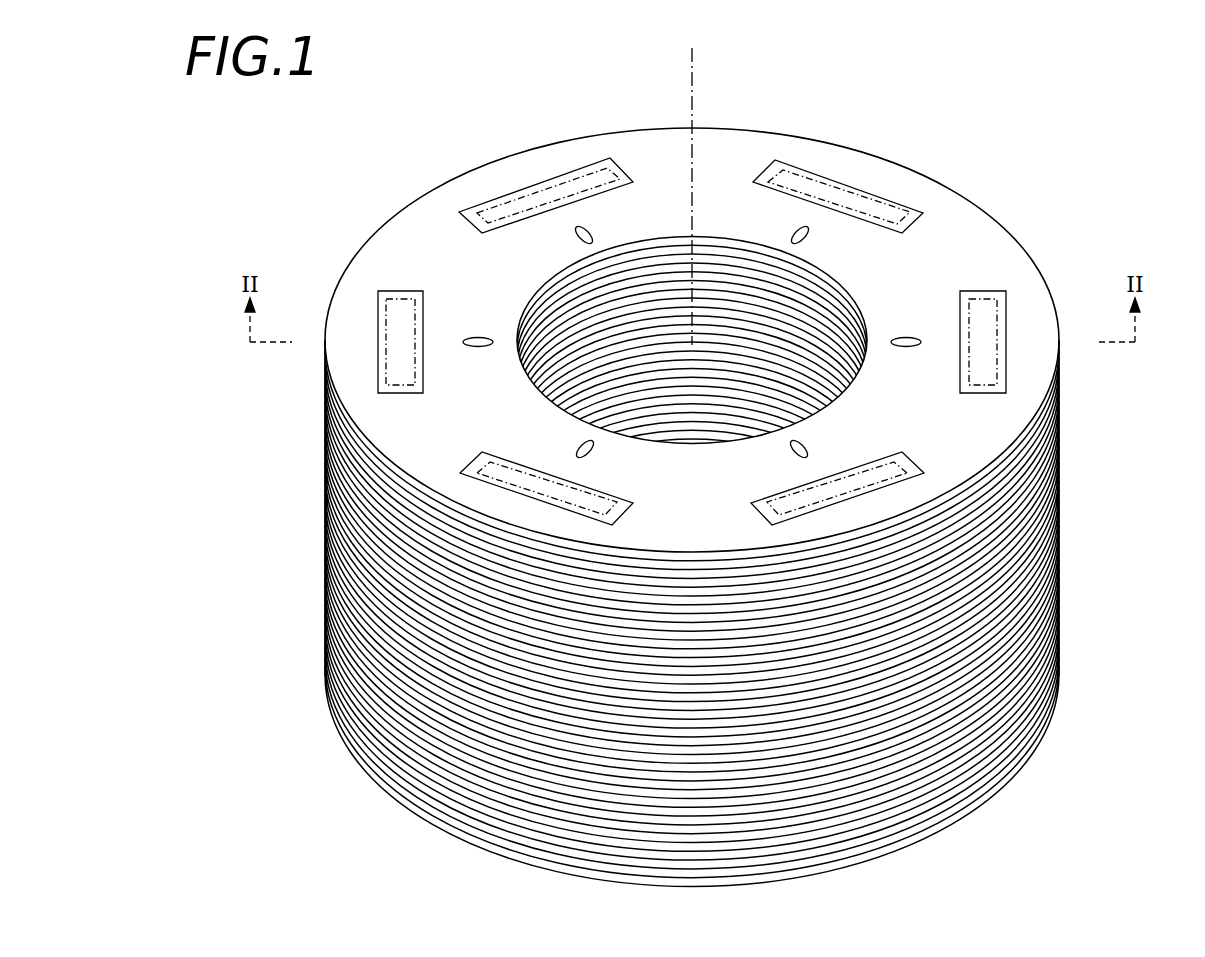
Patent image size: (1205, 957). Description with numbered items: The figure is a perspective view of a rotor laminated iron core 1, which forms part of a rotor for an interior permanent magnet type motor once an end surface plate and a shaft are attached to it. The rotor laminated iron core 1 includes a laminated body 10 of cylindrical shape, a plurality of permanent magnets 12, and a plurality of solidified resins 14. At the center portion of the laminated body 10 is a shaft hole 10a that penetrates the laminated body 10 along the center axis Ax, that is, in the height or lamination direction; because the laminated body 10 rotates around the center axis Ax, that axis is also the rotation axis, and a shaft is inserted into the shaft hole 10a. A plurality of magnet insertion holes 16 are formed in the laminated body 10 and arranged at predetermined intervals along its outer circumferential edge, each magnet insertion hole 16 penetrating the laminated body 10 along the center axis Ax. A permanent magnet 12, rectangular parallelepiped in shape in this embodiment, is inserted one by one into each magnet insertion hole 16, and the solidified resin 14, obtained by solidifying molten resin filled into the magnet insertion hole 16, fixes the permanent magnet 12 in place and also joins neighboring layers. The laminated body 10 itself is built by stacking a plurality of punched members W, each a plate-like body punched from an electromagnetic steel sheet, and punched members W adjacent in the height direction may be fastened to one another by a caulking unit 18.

The rotor laminated iron core 1 is at (713, 467).
The laminated body 10 is at (756, 507).
The shaft hole 10a is at (845, 333).
The permanent magnet 12 is at (818, 180).
The solidified resin 14 is at (622, 177).
The magnet insertion hole 16 is at (587, 167).
The caulking unit 18 is at (477, 336).
The punched member W is at (406, 791).
The center axis Ax is at (694, 85).